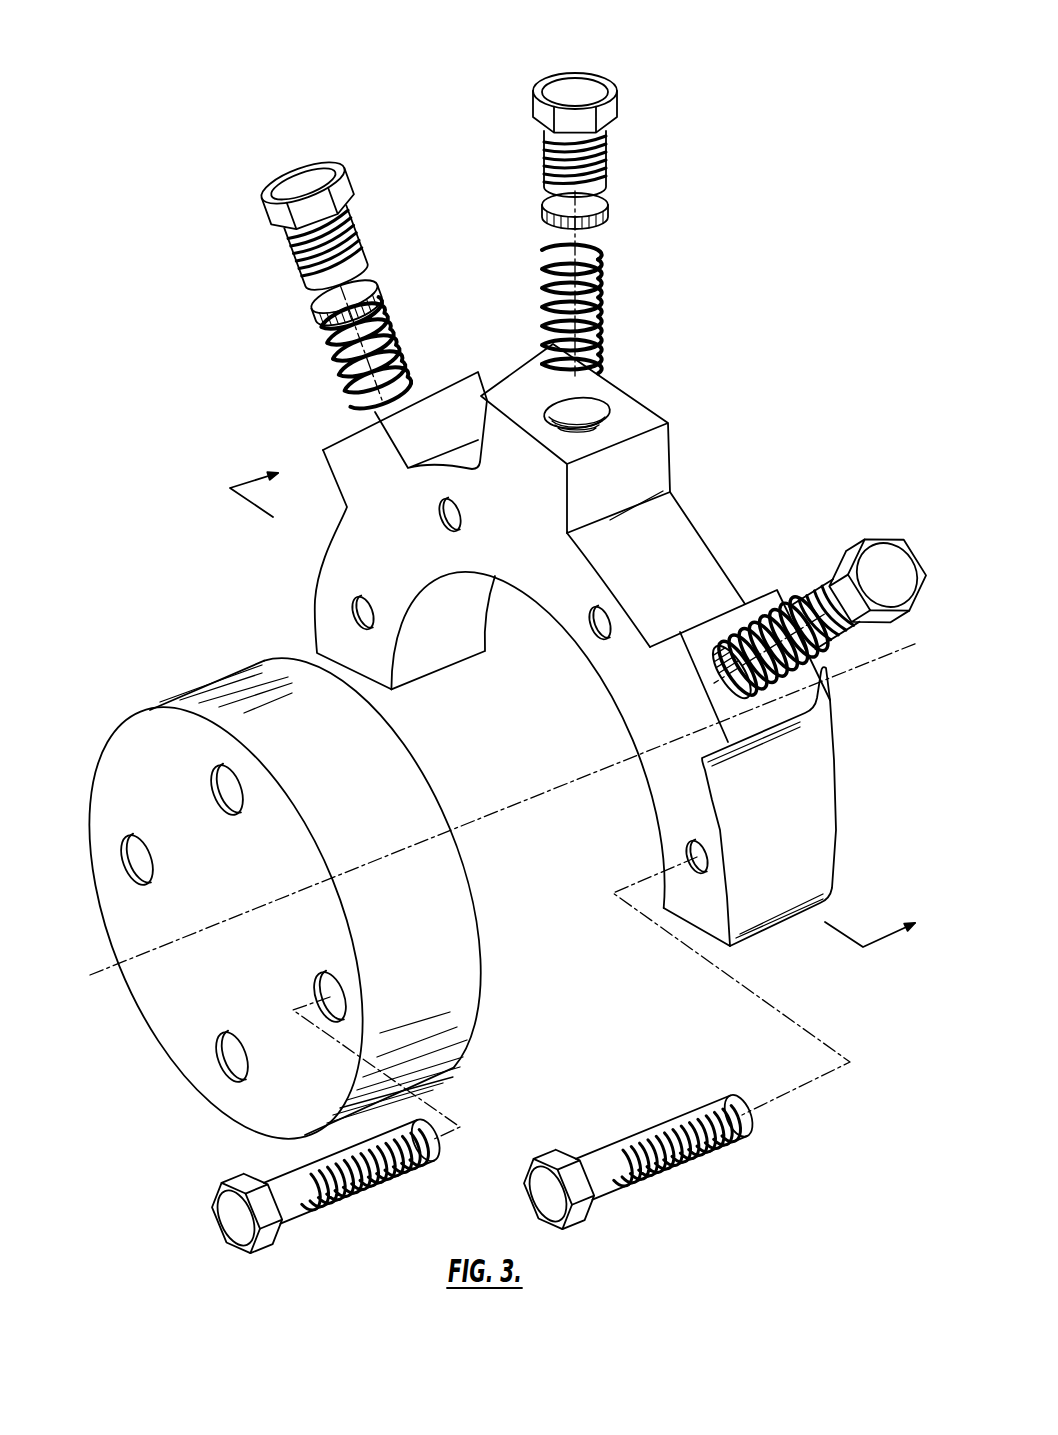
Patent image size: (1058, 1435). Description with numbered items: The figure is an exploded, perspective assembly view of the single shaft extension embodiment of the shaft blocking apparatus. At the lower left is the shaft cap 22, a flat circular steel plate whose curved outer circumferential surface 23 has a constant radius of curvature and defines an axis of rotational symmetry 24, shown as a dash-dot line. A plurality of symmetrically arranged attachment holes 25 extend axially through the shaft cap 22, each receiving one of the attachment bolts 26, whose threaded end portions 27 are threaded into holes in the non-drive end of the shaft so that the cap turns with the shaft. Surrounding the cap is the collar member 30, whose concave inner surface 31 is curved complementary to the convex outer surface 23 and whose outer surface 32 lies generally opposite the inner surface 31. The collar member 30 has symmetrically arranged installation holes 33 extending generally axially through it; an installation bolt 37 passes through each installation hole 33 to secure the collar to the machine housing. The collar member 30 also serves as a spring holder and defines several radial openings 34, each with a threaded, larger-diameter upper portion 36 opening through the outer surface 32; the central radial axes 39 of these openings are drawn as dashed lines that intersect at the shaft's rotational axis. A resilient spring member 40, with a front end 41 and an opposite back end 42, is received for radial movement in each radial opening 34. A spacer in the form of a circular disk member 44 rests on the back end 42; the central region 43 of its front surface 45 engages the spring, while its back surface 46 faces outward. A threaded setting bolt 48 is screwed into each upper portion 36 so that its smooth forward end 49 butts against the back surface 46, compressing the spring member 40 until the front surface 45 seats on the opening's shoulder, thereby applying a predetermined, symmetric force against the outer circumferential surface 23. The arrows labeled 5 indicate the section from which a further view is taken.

The section line 5- 5 is at (572, 704).
The shaft cap 22 is at (123, 780).
The outer circumferential surface 23 is at (352, 824).
The axis of rotational symmetry 24 is at (113, 968).
The attachment holes 25 is at (232, 800).
The attachment bolts 26 is at (344, 1194).
The threaded end portions 27 is at (413, 1177).
The collar member 30 is at (506, 609).
The inner surface 31 is at (417, 649).
The outer surface 32 is at (648, 609).
The installation holes 33 is at (452, 520).
The radial openings 34 is at (595, 403).
The upper portion 36 is at (560, 370).
The installation bolt 37 is at (607, 1177).
The central radial axes 39 is at (603, 373).
The spring members 40 is at (531, 433).
The front end 41 is at (540, 377).
The back end 42 is at (565, 250).
The central region 43 is at (303, 219).
The disk member 44 is at (540, 203).
The front surface 45 is at (330, 323).
The back surface 46 is at (597, 200).
The setting bolt 48 is at (547, 344).
The forward end 49 is at (344, 296).